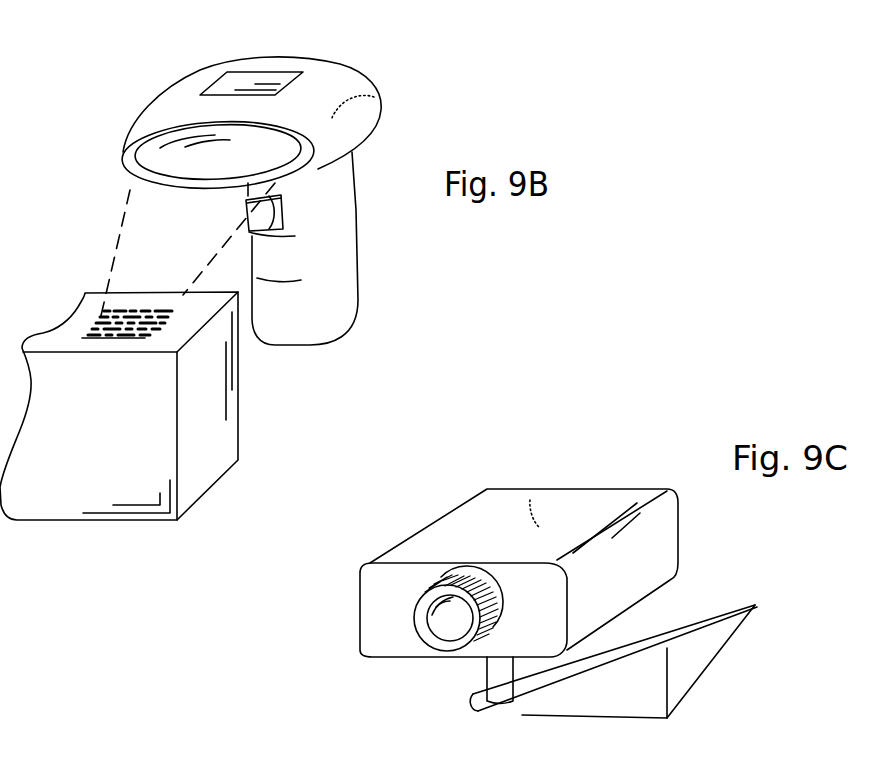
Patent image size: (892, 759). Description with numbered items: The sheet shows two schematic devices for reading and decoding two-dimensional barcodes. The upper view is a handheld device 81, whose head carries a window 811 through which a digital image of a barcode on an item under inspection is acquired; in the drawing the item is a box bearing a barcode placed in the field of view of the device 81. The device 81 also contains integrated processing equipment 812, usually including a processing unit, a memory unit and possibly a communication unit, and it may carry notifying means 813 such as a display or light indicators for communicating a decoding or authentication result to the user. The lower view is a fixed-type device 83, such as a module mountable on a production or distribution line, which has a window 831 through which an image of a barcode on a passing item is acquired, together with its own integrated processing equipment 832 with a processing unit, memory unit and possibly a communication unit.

In FIG. 9B, the device 81 is at (132, 107).
In FIG. 9B, the window 811 is at (180, 166).
In FIG. 9B, the integrated processing equipment 812 is at (380, 101).
In FIG. 9B, the notifying means 813 is at (300, 64).
In FIG. 9C, the device 83 is at (421, 513).
In FIG. 9C, the window 831 is at (448, 650).
In FIG. 9C, the integrated processing equipment 832 is at (530, 500).